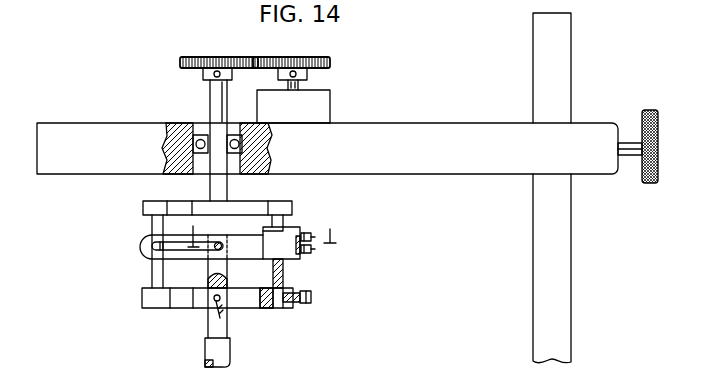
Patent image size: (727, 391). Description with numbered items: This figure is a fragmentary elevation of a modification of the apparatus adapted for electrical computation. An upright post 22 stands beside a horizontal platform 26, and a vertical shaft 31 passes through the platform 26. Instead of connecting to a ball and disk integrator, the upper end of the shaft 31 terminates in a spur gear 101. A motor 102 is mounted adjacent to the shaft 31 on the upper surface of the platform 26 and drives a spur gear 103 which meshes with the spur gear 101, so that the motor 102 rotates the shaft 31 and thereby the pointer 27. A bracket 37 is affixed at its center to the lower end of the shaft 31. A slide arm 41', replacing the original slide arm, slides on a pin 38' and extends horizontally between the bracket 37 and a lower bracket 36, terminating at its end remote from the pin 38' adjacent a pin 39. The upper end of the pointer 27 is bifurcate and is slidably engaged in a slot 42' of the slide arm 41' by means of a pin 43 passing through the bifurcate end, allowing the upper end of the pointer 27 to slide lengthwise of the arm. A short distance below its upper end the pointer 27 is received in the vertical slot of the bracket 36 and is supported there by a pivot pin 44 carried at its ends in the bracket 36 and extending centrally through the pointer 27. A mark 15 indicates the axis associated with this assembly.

The spur gear 101 is at (193, 57).
The spur gear 103 is at (316, 57).
The shaft 31 is at (208, 97).
The motor 102 is at (330, 108).
The upright post 22 is at (567, 108).
The platform 26 is at (398, 175).
The pin 43 is at (219, 242).
The bracket 37 is at (260, 210).
The axis 15 is at (252, 230).
The slot 42' is at (180, 246).
The pin 39 is at (152, 277).
The slide arm 41' is at (296, 253).
The pin 38' is at (241, 294).
The pivot pin 44 is at (207, 313).
The bracket 36 is at (240, 307).
The pointer 27 is at (205, 350).